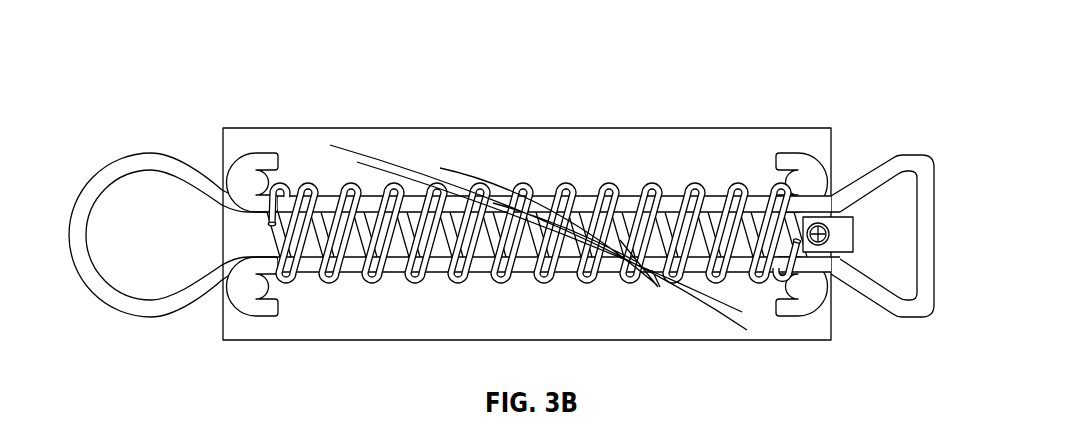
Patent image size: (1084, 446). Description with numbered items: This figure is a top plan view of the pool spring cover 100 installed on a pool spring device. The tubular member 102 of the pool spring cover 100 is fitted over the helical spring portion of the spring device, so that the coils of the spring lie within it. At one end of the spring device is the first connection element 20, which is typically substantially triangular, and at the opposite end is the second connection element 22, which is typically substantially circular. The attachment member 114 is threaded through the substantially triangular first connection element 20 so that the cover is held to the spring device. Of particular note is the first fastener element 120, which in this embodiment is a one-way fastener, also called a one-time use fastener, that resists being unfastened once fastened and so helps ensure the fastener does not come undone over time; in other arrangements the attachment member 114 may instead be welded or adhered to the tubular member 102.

The pool spring cover 100 is at (557, 112).
The tubular member 102 is at (435, 133).
The second connection element 22 is at (150, 158).
The first connection element 20 is at (908, 160).
The attachment member 114 is at (845, 235).
The first fastener element 120 is at (818, 246).